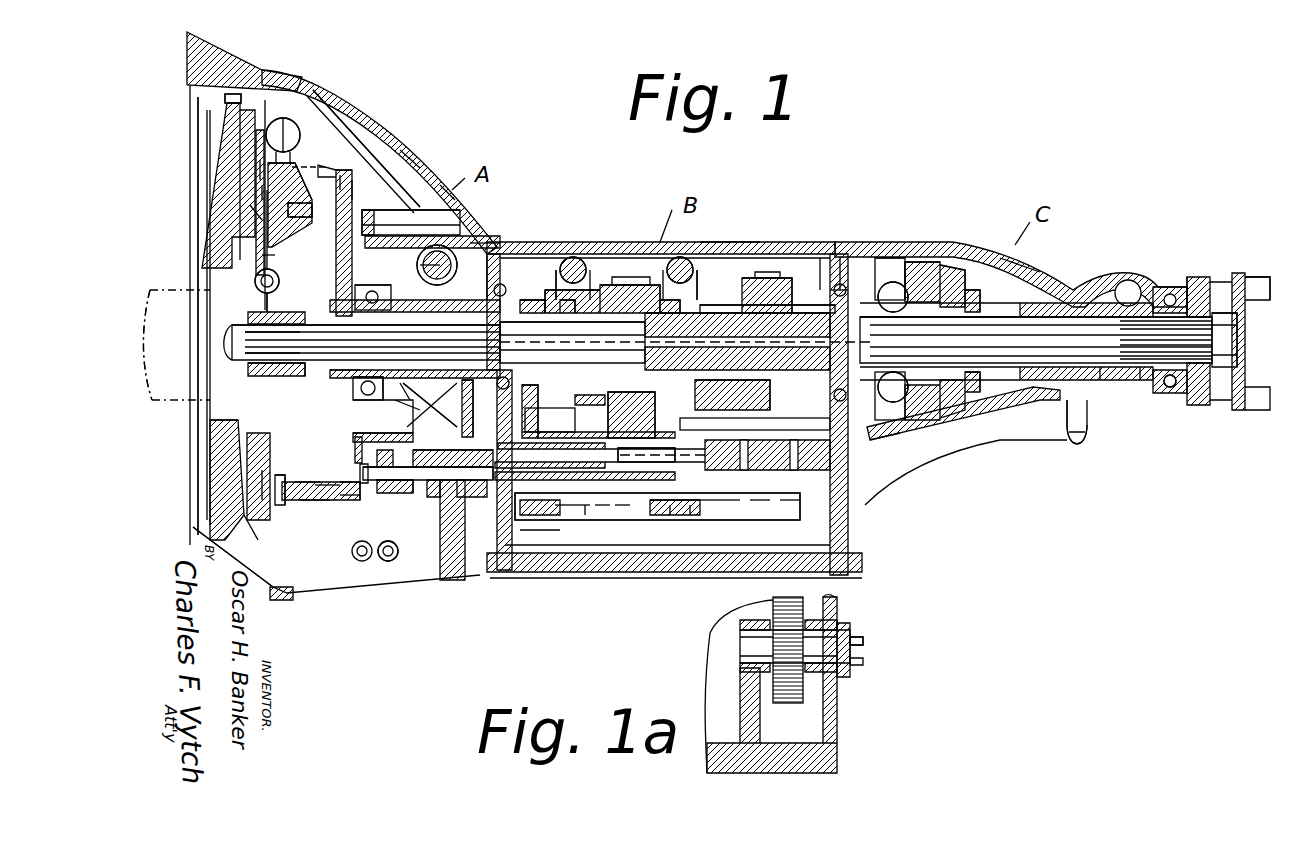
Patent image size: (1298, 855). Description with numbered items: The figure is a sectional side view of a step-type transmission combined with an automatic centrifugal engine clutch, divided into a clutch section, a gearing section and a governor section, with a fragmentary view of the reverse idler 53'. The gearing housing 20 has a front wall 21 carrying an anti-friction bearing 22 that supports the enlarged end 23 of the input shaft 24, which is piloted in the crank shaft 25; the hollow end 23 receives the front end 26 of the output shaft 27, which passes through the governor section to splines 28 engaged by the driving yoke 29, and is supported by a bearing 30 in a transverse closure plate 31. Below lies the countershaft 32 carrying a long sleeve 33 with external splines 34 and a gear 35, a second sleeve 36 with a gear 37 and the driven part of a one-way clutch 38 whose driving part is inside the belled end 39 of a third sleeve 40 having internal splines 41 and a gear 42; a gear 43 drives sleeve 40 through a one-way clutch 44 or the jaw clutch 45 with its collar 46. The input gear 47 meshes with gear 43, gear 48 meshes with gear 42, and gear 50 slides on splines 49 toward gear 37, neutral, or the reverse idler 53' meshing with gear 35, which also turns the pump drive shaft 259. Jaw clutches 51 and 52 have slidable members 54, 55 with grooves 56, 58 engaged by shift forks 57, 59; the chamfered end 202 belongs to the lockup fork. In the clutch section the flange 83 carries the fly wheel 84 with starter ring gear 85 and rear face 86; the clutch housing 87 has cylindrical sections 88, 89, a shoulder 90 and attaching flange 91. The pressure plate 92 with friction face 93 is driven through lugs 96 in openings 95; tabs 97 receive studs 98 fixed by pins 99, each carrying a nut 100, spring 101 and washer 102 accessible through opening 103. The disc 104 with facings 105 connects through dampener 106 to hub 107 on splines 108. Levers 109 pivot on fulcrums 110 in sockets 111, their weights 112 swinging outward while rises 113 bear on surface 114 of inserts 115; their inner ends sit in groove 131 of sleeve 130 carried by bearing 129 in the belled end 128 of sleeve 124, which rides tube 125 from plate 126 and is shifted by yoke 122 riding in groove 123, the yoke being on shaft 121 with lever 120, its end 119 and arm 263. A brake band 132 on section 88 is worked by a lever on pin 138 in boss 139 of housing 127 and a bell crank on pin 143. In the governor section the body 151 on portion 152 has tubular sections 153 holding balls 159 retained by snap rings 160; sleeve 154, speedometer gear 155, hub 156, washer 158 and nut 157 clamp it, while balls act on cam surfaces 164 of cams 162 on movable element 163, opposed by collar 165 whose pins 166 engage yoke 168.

In FIG. 1, the housing 20 is at (735, 242).
In FIG. 1, the front wall 21 is at (530, 295).
In FIG. 1, the anti-friction bearing 22 is at (545, 290).
In FIG. 1, the enlarged end 23 is at (525, 310).
In FIG. 1, the input shaft 24 is at (366, 337).
In FIG. 1, the crank shaft 25 is at (150, 335).
In FIG. 1, the front end 26 is at (572, 337).
In FIG. 1, the output shaft 27 is at (737, 322).
In FIG. 1, the splines 28 is at (1190, 330).
In FIG. 1, the driving yoke 29 is at (1246, 285).
In FIG. 1, the anti-friction bearing 30 is at (832, 283).
In FIG. 1, the transverse closure plate 31 is at (830, 266).
In FIG. 1, the countershaft 32 is at (646, 453).
In FIG. 1, the long sleeve 33 is at (728, 505).
In FIG. 1, the external splines 34 is at (657, 503).
In FIG. 1, the gear 35 is at (792, 503).
In FIG. 1, the second sleeve 36 is at (758, 502).
In FIG. 1, the gear 37 is at (712, 515).
In FIG. 1, the one-way clutch 38 is at (692, 516).
In FIG. 1, the belled end 39 is at (672, 516).
In FIG. 1, the third sleeve 40 is at (655, 515).
In FIG. 1, the internal splines 41 is at (631, 415).
In FIG. 1, the gear 42 is at (620, 520).
In FIG. 1, the gear 43 is at (532, 535).
In FIG. 1, the one-way roller clutch 44 is at (560, 520).
In FIG. 1, the jaw clutch 45 is at (580, 520).
In FIG. 1, the collar 46 is at (600, 520).
In FIG. 1, the gear 47 is at (556, 290).
In FIG. 1, the gear 48 is at (625, 280).
In FIG. 1, the external splines 49 is at (722, 305).
In FIG. 1, the gear 50 is at (768, 275).
In FIG. 1, the jaw clutch 51 is at (585, 300).
In FIG. 1, the jaw clutch 52 is at (665, 298).
In FIG. 1, the slidable member 54 is at (560, 290).
In FIG. 1, the slidable member 55 is at (700, 295).
In FIG. 1, the groove 56 is at (560, 392).
In FIG. 1, the shift fork 57 is at (588, 290).
In FIG. 1, the groove 58 is at (732, 395).
In FIG. 1, the shift fork 59 is at (690, 262).
In FIG. 1, the flange 83 is at (198, 263).
In FIG. 1, the fly wheel 84 is at (225, 140).
In FIG. 1, the starter ring gear 85 is at (225, 98).
In FIG. 1, the rear face 86 is at (283, 118).
In FIG. 1, the clutch housing 87 is at (350, 172).
In FIG. 1, the cylindrical section 88 is at (353, 436).
In FIG. 1, the cylindrical section 89 is at (262, 500).
In FIG. 1, the shoulder 90 is at (416, 162).
In FIG. 1, the attaching flange 91 is at (258, 520).
In FIG. 1, the clutch pressure plate 92 is at (282, 475).
In FIG. 1, the friction face 93 is at (262, 460).
In FIG. 1, the openings 95 is at (365, 125).
In FIG. 1, the lugs 96 is at (258, 168).
In FIG. 1, the inwardly bent tabs 97 is at (318, 485).
In FIG. 1, the studs 98 is at (262, 483).
In FIG. 1, the pins 99 is at (300, 482).
In FIG. 1, the nut 100 is at (345, 500).
In FIG. 1, the spring 101 is at (348, 482).
In FIG. 1, the washer 102 is at (330, 502).
In FIG. 1, the opening 103 is at (385, 493).
In FIG. 1, the disc 104 is at (210, 247).
In FIG. 1, the friction facings 105 is at (260, 190).
In FIG. 1, the torsional vibration dampener 106 is at (280, 279).
In FIG. 1, the clutch hub 107 is at (275, 300).
In FIG. 1, the splines 108 is at (285, 372).
In FIG. 1, the levers 109 is at (278, 255).
In FIG. 1, the fulcrum 110 is at (350, 175).
In FIG. 1, the socket 111 is at (355, 185).
In FIG. 1, the weight 112 is at (286, 128).
In FIG. 1, the rise 113 is at (265, 230).
In FIG. 1, the surface 114 is at (300, 218).
In FIG. 1, the hardened insert 115 is at (305, 165).
In FIG. 1, the end 119 is at (468, 440).
In FIG. 1, the lever 120 is at (450, 410).
In FIG. 1, the shaft 121 is at (448, 250).
In FIG. 1, the yoke 122 is at (485, 238).
In FIG. 1, the groove 123 is at (412, 412).
In FIG. 1, the sleeve 124 is at (405, 395).
In FIG. 1, the tube 125 is at (300, 332).
In FIG. 1, the plate 126 is at (494, 255).
In FIG. 1, the housing 127 is at (442, 185).
In FIG. 1, the belled end 128 is at (355, 288).
In FIG. 1, the anti-friction bearing 129 is at (360, 400).
In FIG. 1, the sleeve 130 is at (300, 353).
In FIG. 1, the groove 131 is at (345, 385).
In FIG. 1, the brake band 132 is at (378, 225).
In FIG. 1, the pin 138 is at (420, 480).
In FIG. 1, the boss 139 is at (455, 450).
In FIG. 1, the pin 143 is at (440, 550).
In FIG. 1, the governor body 151 is at (850, 262).
In FIG. 1, the reduced diameter portion 152 is at (1036, 331).
In FIG. 1, the tubular sections 153 is at (880, 445).
In FIG. 1, the sleeve 154 is at (1010, 262).
In FIG. 1, the speedometer drive gear 155 is at (1100, 385).
In FIG. 1, the hub 156 is at (1140, 385).
In FIG. 1, the nut 157 is at (1237, 342).
In FIG. 1, the washer 158 is at (1180, 392).
In FIG. 1, the governor balls 159 is at (893, 342).
In FIG. 1, the snap rings 160 is at (882, 262).
In FIG. 1, the cam 162 is at (922, 262).
In FIG. 1, the movable element 163 is at (945, 266).
In FIG. 1, the cam surface 164 is at (905, 265).
In FIG. 1, the collar 165 is at (1068, 412).
In FIG. 1, the pins 166 is at (970, 290).
In FIG. 1, the yoke 168 is at (972, 398).
In FIG. 1, the chamfered end 202 is at (587, 520).
In FIG. 1A, the pump drive shaft 259 is at (858, 640).
In FIG. 1, the arm 263 is at (420, 264).
In FIG. 1A, the reverse idler 53' is at (793, 662).